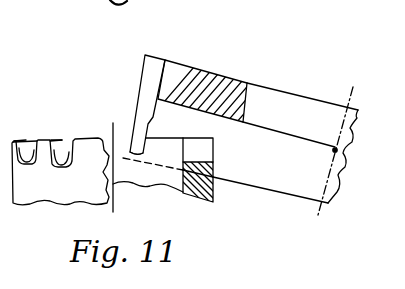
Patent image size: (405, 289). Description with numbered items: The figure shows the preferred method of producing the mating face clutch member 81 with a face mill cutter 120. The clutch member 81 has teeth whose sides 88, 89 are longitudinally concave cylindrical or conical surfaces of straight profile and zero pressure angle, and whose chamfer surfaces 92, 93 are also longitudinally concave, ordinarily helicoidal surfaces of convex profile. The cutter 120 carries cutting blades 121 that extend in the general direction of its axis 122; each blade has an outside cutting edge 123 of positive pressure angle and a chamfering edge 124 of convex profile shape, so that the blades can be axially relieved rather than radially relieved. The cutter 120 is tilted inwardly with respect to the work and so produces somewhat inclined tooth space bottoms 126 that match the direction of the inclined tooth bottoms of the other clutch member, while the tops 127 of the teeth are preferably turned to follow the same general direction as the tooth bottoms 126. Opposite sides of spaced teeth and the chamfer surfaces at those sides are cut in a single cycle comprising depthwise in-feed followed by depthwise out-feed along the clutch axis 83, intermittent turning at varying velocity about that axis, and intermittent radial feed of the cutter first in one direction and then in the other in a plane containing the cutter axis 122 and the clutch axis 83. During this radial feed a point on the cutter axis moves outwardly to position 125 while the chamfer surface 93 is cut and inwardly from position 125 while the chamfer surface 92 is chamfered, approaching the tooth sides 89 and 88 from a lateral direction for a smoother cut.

The clutch member 81 is at (45, 201).
The clutch axis 83 is at (114, 208).
The tooth side 88 is at (61, 168).
The tooth side 89 is at (28, 166).
The chamfer surface 92 is at (58, 160).
The chamfer surface 93 is at (32, 159).
The face mill cutter 120 is at (214, 79).
The cutting blades 121 is at (146, 83).
The cutter axis 122 is at (345, 117).
The outside cutting edges 123 is at (131, 138).
The chamfering edges 124 is at (148, 175).
The position of cutter axis point 125 is at (334, 152).
The tooth space bottoms 126 is at (199, 159).
The tooth tops 127 is at (200, 137).